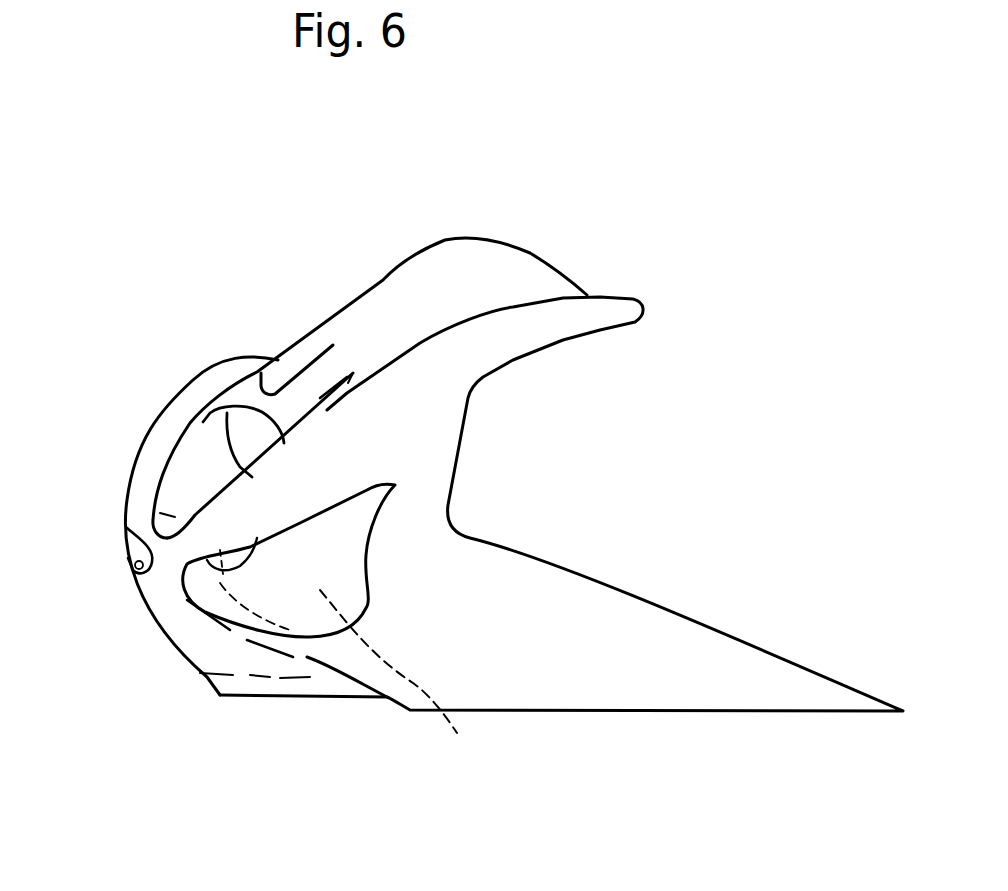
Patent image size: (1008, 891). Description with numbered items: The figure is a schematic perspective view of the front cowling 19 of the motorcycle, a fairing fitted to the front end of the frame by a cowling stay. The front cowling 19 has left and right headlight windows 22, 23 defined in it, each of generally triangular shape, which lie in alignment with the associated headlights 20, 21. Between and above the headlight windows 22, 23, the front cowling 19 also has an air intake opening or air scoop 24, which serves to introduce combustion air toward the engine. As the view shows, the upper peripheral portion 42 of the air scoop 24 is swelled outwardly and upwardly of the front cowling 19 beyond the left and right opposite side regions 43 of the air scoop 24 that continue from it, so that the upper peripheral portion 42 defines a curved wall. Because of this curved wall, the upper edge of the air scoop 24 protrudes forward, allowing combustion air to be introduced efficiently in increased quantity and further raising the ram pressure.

The front cowling 19 is at (457, 457).
The headlight 20 is at (133, 590).
The headlight 21 is at (399, 686).
The headlight window 22 is at (128, 527).
The headlight window 23 is at (232, 552).
The air scoop 24 is at (243, 447).
The upper peripheral portion 42 is at (333, 345).
The side regions 43 is at (213, 400).